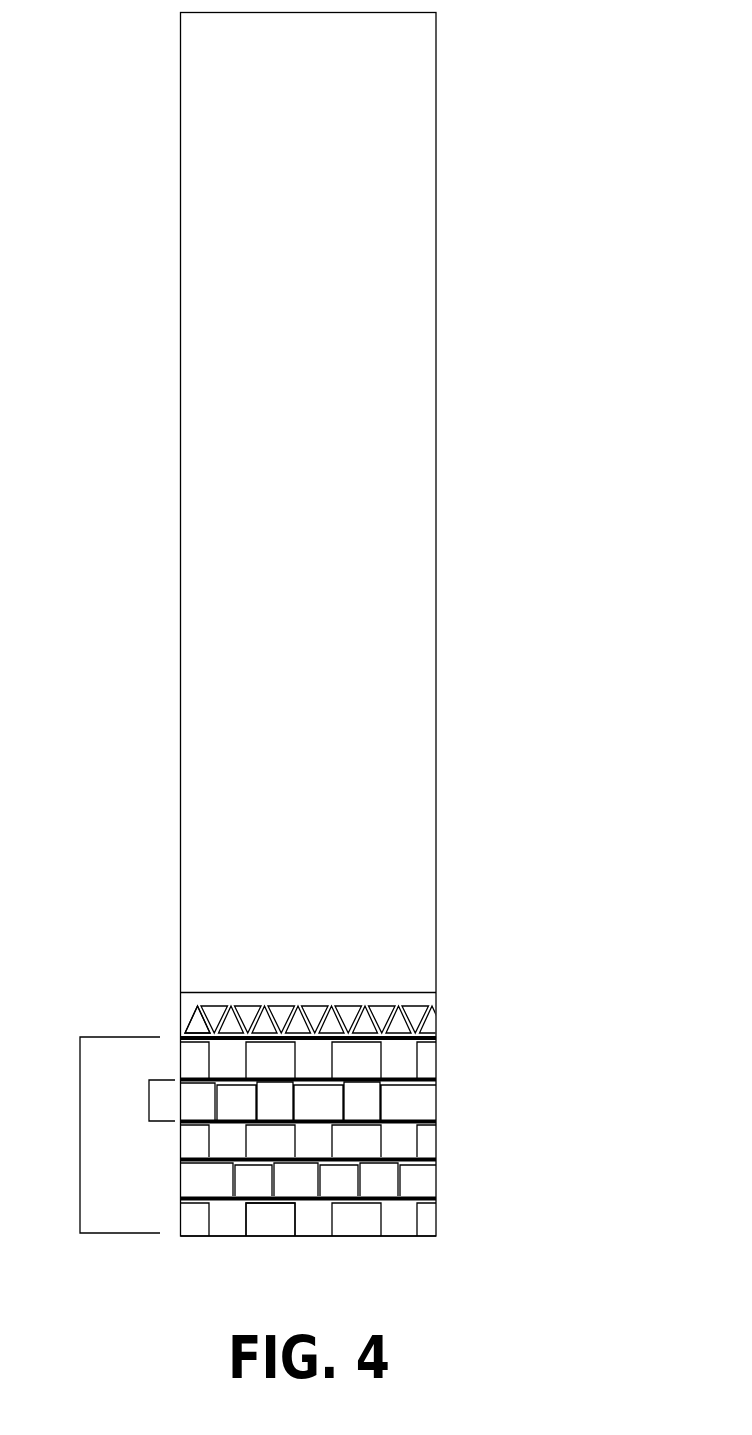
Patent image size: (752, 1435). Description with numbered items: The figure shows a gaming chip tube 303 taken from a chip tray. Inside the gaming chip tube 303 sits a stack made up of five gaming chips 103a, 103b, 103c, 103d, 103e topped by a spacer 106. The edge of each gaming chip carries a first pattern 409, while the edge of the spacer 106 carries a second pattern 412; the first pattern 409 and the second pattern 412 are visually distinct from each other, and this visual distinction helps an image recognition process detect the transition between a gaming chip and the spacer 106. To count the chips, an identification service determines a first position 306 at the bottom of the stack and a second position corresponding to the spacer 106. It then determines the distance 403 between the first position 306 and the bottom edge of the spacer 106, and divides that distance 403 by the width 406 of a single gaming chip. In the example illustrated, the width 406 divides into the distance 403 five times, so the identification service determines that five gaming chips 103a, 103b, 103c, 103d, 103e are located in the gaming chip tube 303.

The gaming chip tube 303 is at (535, 52).
The spacer 106 is at (436, 1010).
The second pattern 412 is at (294, 1003).
The gaming chip 103a is at (436, 1058).
The gaming chip 103b is at (436, 1097).
The gaming chip 103c is at (436, 1140).
The gaming chip 103d is at (436, 1178).
The gaming chip 103e is at (436, 1216).
The first pattern 409 is at (273, 1222).
The first position 306 is at (438, 1237).
The distance 403 is at (80, 1138).
The width 406 is at (149, 1100).